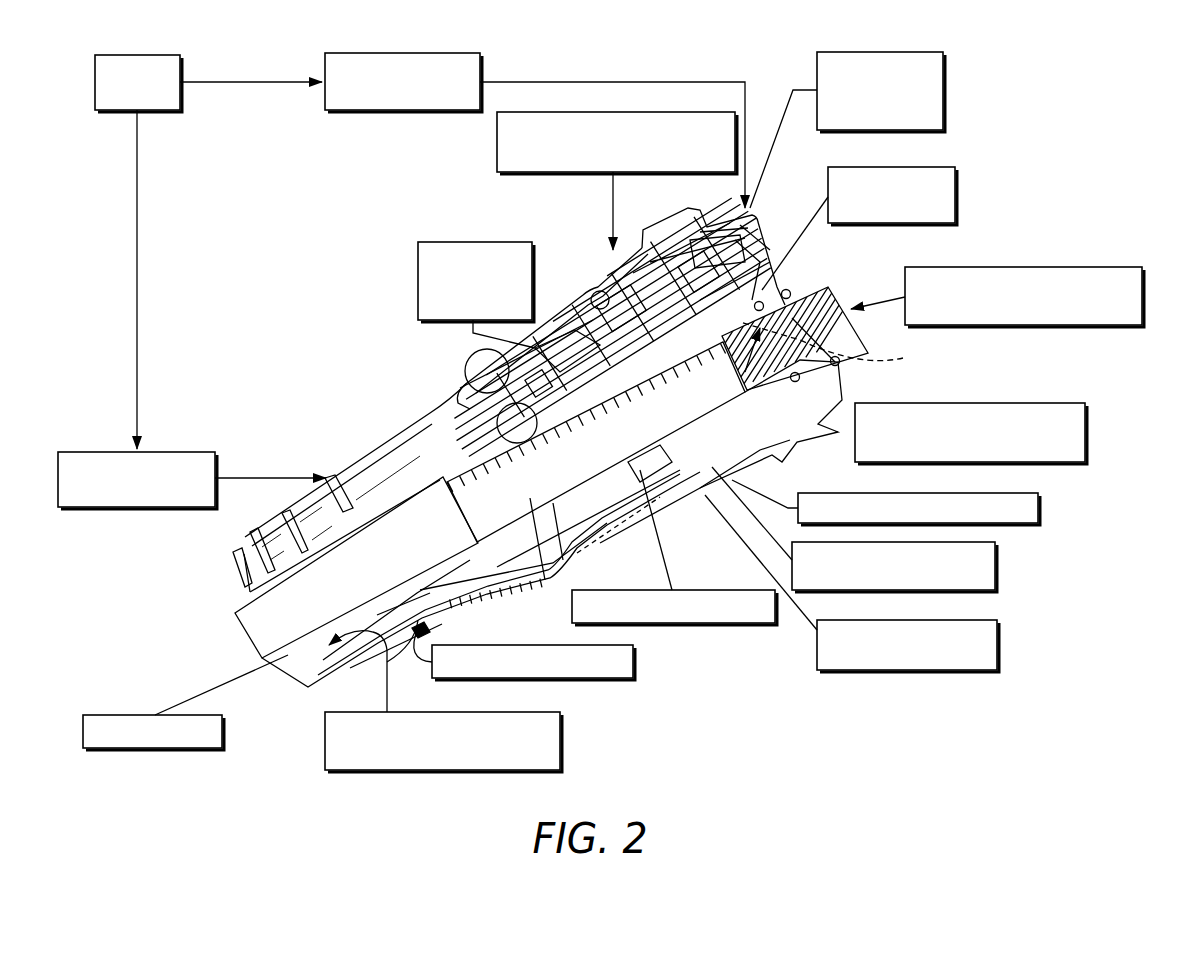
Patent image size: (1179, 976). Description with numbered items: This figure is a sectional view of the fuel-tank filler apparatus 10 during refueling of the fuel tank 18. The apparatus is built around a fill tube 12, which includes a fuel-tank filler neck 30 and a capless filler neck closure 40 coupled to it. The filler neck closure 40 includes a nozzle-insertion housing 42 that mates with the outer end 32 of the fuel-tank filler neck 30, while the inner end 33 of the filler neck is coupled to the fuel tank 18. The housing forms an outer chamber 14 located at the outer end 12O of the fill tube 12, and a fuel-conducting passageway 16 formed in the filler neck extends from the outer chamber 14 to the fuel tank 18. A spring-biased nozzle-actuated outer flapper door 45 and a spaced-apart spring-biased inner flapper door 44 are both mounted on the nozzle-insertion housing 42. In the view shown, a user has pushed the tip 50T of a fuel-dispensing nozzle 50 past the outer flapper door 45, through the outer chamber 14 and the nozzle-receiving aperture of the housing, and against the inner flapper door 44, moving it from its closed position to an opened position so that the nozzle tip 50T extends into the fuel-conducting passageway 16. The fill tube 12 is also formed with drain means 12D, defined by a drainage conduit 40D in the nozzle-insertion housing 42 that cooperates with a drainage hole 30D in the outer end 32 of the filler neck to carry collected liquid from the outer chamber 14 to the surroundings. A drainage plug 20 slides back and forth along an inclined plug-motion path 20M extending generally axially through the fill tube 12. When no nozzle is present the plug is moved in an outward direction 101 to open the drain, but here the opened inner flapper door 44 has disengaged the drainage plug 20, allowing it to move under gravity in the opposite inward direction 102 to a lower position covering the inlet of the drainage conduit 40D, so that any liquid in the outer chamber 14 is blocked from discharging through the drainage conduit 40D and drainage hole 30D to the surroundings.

The fuel-tank filler apparatus 10 is at (545, 112).
The fill tube 12 is at (135, 55).
The drain means 12D is at (1090, 544).
The outer end of fill tube 12O is at (772, 221).
The outer chamber 14 is at (875, 167).
The fuel-conducting passageway 16 is at (375, 770).
The fuel tank 18 is at (133, 715).
The drainage plug 20 is at (728, 623).
The plug-motion path 20M is at (848, 346).
The fuel-tank filler neck 30 is at (107, 452).
The drainage hole 30D is at (995, 566).
The outer end of fuel-tank filler neck 32 is at (672, 222).
The inner end of fuel-tank filler neck 33 is at (232, 560).
The filler neck closure 40 is at (370, 53).
The drainage conduit 40D is at (1038, 508).
The nozzle-insertion housing 42 is at (905, 403).
The inner flapper door 44 is at (466, 242).
The outer flapper door 45 is at (862, 52).
The fuel-dispensing nozzle 50 is at (955, 267).
The nozzle tip 50T is at (572, 678).
The outward direction 101 is at (802, 292).
The inward direction 102 is at (630, 497).